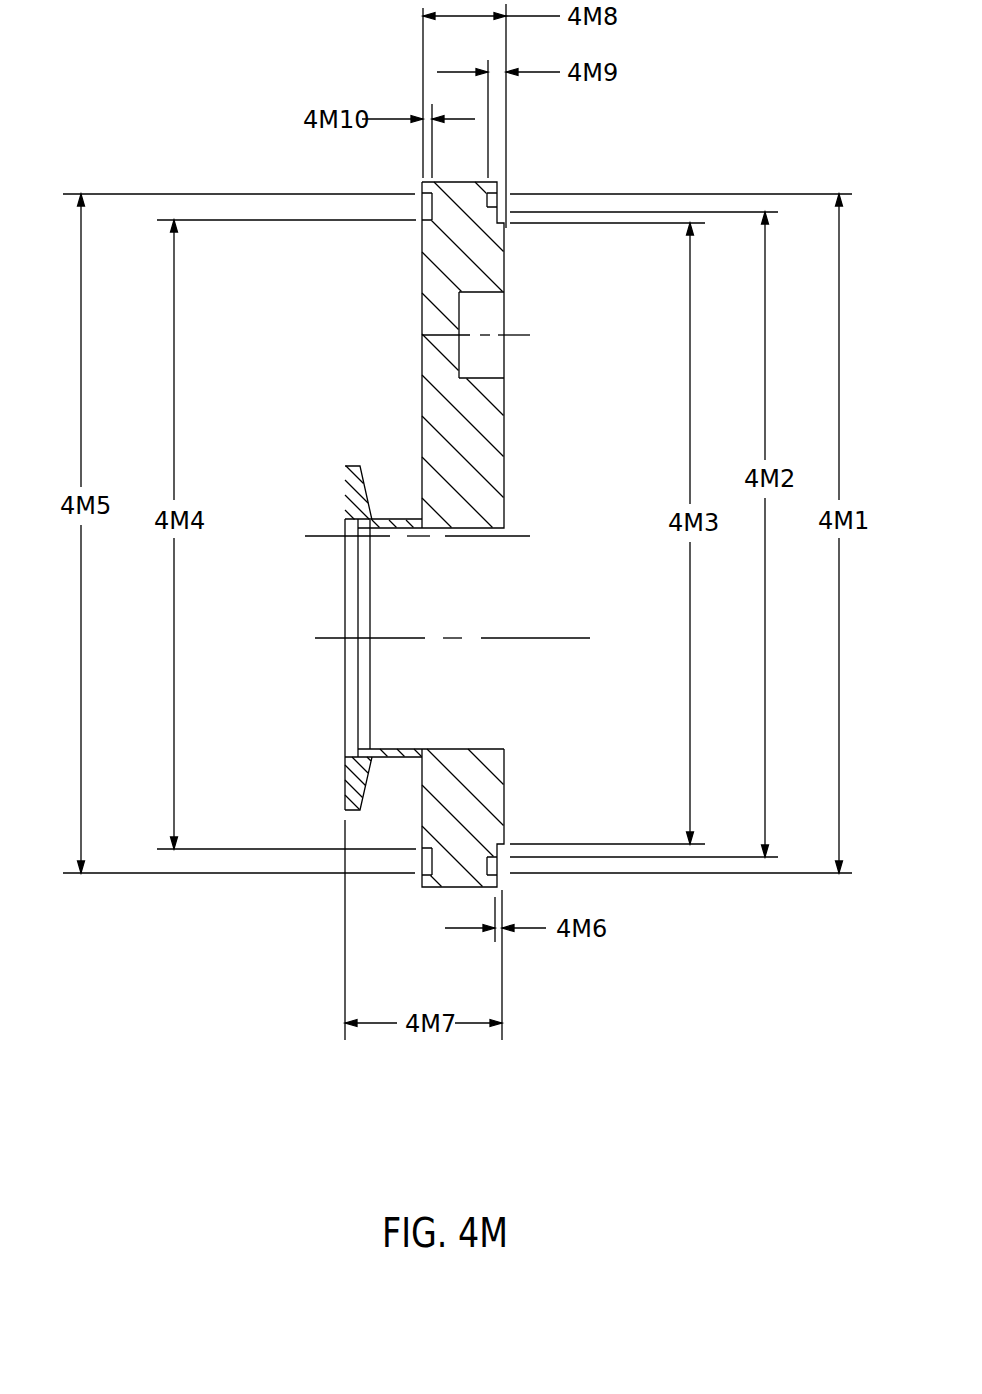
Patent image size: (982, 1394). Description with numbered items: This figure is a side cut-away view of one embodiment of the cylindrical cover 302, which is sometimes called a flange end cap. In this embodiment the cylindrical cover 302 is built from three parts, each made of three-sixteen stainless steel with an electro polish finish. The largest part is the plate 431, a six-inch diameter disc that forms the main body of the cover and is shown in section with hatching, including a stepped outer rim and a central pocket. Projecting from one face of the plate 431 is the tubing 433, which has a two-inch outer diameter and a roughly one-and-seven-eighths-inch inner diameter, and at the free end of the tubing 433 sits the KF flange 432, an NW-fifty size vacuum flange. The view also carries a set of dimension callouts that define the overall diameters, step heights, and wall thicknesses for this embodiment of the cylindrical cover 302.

The cylindrical cover 302 is at (647, 89).
The plate 431 is at (422, 278).
The KF flange 432 is at (350, 466).
The tubing 433 is at (399, 519).